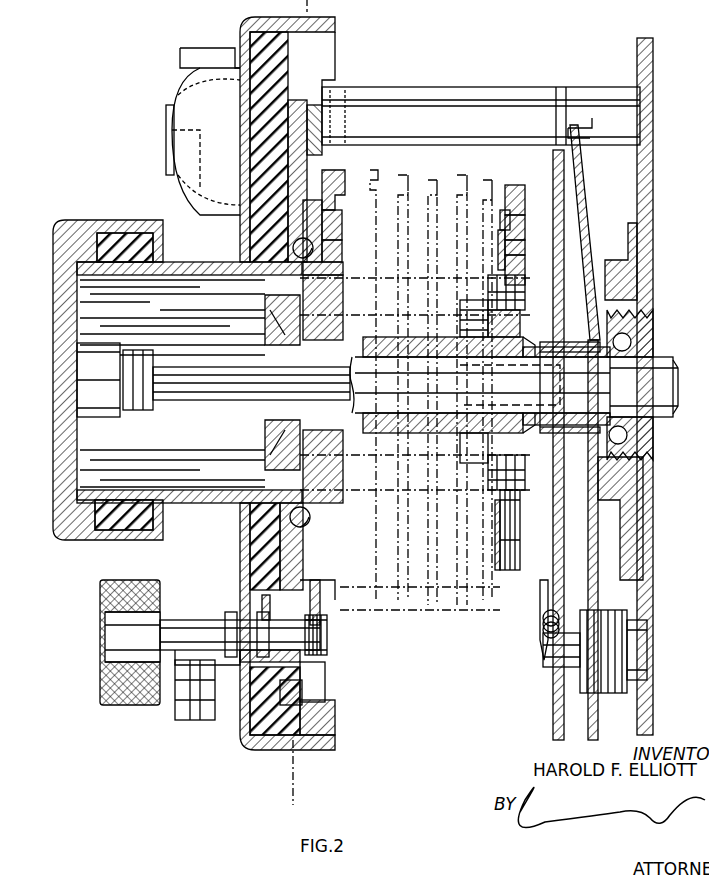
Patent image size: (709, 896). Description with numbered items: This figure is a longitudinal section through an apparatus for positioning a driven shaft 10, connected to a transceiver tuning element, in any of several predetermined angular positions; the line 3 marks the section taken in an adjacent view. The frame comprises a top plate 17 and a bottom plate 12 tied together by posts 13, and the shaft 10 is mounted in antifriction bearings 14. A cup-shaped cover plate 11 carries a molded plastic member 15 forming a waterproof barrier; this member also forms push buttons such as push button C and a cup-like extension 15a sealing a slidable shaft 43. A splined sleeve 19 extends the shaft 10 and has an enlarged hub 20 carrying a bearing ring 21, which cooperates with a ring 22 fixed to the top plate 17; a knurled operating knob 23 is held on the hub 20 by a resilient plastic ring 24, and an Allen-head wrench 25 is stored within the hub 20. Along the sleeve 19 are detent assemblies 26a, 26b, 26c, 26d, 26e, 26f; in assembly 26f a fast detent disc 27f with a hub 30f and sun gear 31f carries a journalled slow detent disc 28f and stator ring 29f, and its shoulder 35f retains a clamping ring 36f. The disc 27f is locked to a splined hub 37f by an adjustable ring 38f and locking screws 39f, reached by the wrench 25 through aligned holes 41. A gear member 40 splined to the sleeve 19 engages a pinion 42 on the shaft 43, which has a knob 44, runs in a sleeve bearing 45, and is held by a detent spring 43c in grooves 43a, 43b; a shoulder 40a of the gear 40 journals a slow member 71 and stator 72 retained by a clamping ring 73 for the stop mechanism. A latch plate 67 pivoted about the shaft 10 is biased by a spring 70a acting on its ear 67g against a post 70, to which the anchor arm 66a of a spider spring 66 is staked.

The section line 3- 3 is at (275, 775).
The cover plate 11 is at (248, 30).
The molded plastic member 15 is at (322, 55).
The top plate 17 is at (305, 105).
The slow rotating member 71 is at (297, 178).
The stator 72 is at (328, 172).
The push button C is at (185, 130).
The posts 13 is at (555, 86).
The bottom plate 12 is at (652, 168).
The knurled operating knob 23 is at (60, 308).
The resilient molded plastic ring 24 is at (128, 230).
The hub 20 is at (192, 272).
The Allen-head wrench 25 is at (190, 402).
The aligned holes 41 is at (318, 297).
The shoulder 40a is at (342, 215).
The ring 22 is at (322, 230).
The gear member 40 is at (342, 247).
The ring 21 is at (330, 265).
The antifriction bearings 14 is at (645, 328).
The splined sleeve 19 is at (483, 412).
The shaft 10 is at (662, 370).
The latch plate 67 is at (565, 275).
The spider spring 66 is at (594, 255).
The anchor arm 66a is at (595, 595).
The detent assembly 26a is at (376, 376).
The detent assembly 26b is at (392, 160).
The detent assembly 26c is at (423, 378).
The detent assembly 26d is at (442, 160).
The detent assembly 26e is at (496, 376).
The detent assembly 26f is at (505, 175).
The slow detent disc 28f is at (525, 165).
The stator ring 29f is at (525, 198).
The fast detent disc 27f is at (508, 222).
The clamping ring 36f is at (528, 233).
The shoulder 35f is at (524, 250).
The axially adjustable ring 38f is at (530, 262).
The locking screws 39f is at (520, 300).
The hub 37f is at (525, 320).
The hub 30f is at (490, 225).
The sun gear 31f is at (515, 575).
The ear 67g is at (542, 610).
The biasing spring 70a is at (550, 628).
The post 70 is at (560, 665).
The knob 44 is at (100, 648).
The shaft 43 is at (188, 640).
The detent groove 43a is at (245, 630).
The detent spring 43c is at (262, 600).
The detent groove 43b is at (298, 662).
The pinion 42 is at (328, 655).
The clamping ring 73 is at (320, 600).
The sleeve bearing 45 is at (300, 692).
The cup-like extension 15a is at (215, 705).